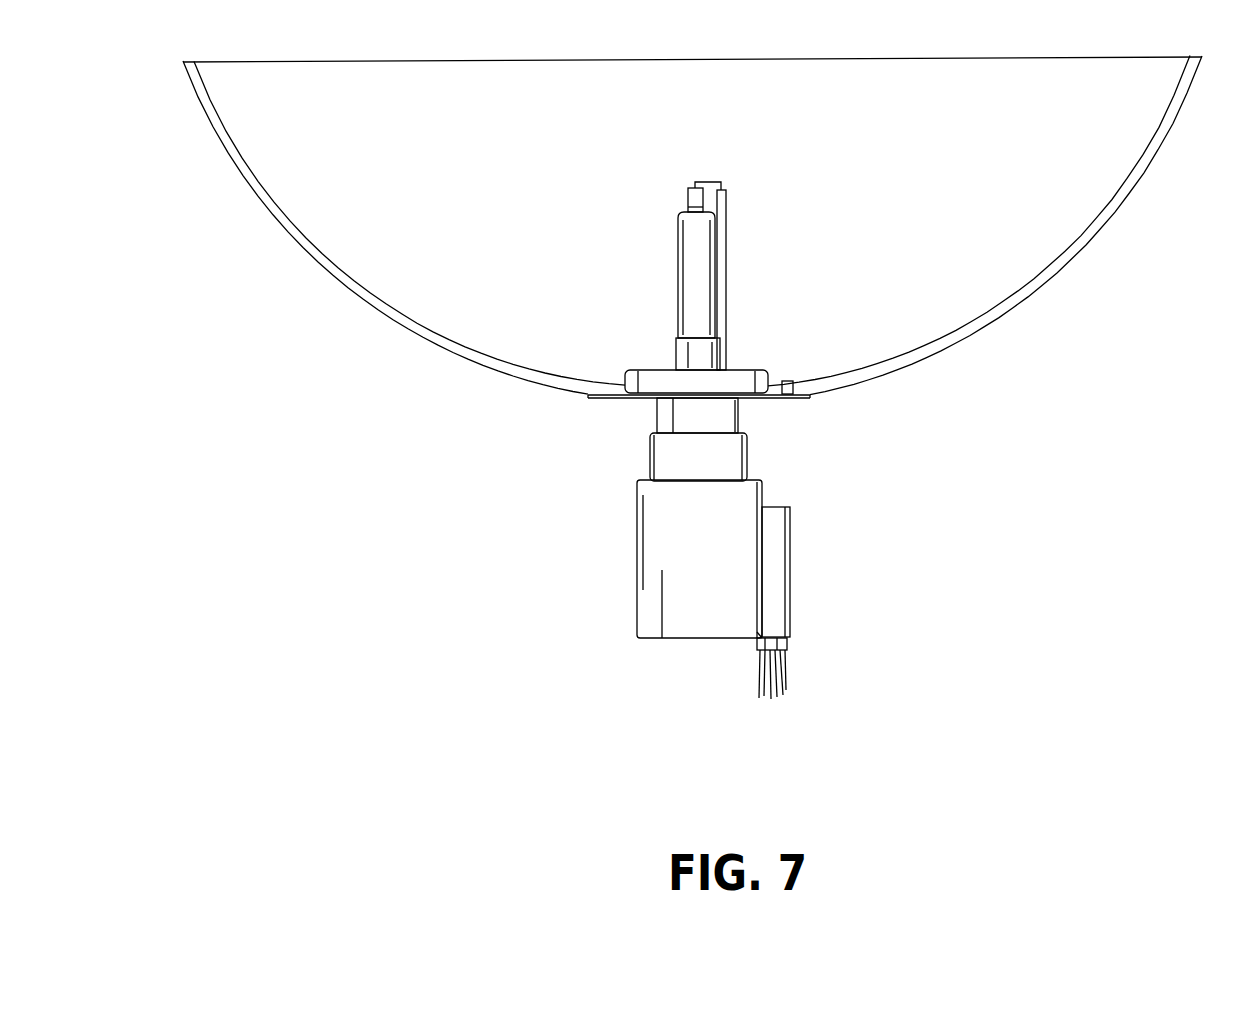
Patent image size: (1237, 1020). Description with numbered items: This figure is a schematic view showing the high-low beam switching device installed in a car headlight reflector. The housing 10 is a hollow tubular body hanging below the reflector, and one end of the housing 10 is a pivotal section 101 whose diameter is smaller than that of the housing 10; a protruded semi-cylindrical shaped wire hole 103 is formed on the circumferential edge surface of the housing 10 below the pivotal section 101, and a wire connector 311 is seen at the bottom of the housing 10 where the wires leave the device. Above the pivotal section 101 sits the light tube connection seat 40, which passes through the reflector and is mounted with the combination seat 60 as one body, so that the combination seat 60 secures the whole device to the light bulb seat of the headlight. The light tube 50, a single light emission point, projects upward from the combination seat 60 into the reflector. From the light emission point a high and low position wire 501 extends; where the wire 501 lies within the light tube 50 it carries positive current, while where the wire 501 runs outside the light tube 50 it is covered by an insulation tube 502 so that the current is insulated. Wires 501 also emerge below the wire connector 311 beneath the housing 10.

The housing 10 is at (633, 592).
The pivotal section 101 is at (648, 458).
The wire hole 103 is at (757, 640).
The wire connector 311 is at (782, 652).
The light tube connection seat 40 is at (740, 410).
The light tube 50 is at (667, 247).
The high and low position wire 501 is at (785, 668).
The insulation tube 502 is at (721, 253).
The combination seat 60 is at (652, 368).